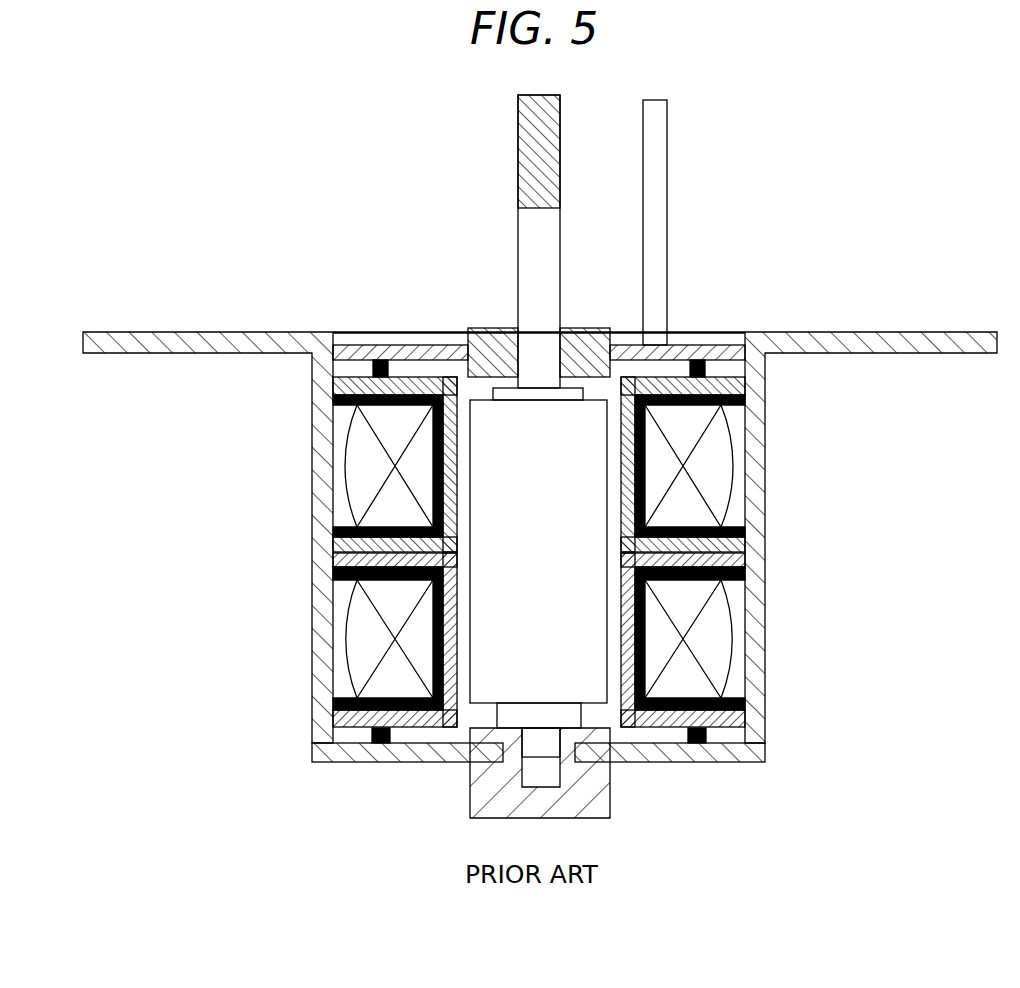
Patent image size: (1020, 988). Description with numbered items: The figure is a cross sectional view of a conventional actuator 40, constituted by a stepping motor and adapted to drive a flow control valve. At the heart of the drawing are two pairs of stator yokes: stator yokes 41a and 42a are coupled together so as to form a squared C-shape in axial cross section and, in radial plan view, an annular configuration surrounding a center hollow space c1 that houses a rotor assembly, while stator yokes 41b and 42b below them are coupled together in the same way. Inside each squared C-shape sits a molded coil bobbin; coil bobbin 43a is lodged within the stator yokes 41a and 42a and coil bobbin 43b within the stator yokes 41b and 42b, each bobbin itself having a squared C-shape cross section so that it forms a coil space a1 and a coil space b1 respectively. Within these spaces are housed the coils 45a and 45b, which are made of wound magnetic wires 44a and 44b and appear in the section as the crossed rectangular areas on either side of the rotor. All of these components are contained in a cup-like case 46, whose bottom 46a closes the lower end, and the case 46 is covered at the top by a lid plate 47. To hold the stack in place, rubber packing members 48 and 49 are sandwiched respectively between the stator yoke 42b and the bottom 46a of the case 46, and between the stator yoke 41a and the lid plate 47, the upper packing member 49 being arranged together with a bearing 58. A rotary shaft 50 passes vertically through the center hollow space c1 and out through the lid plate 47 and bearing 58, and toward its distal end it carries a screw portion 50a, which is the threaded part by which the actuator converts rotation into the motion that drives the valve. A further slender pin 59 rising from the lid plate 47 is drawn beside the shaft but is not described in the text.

The actuator 40 is at (782, 252).
The stator yoke 41a is at (743, 392).
The stator yoke 41b is at (767, 563).
The stator yoke 42a is at (768, 543).
The stator yoke 42b is at (767, 727).
The coil bobbin 43a is at (743, 531).
The coil bobbin 43b is at (767, 703).
The magnetic wire 44a is at (365, 468).
The magnetic wire 44b is at (365, 648).
The coil 45a is at (715, 468).
The coil 45b is at (767, 636).
The case 46 is at (313, 433).
The bottom of the case 46a is at (381, 763).
The lid plate 47 is at (413, 345).
The rubber packing member 48 is at (318, 728).
The rubber packing member 49 is at (372, 355).
The rotary shaft 50 is at (494, 426).
The screw portion 50a is at (517, 220).
The bearing 58 is at (500, 328).
The guide pin 59 is at (667, 200).
The coil space a1 is at (345, 515).
The coil space b1 is at (342, 590).
The center hollow space c1 is at (473, 718).